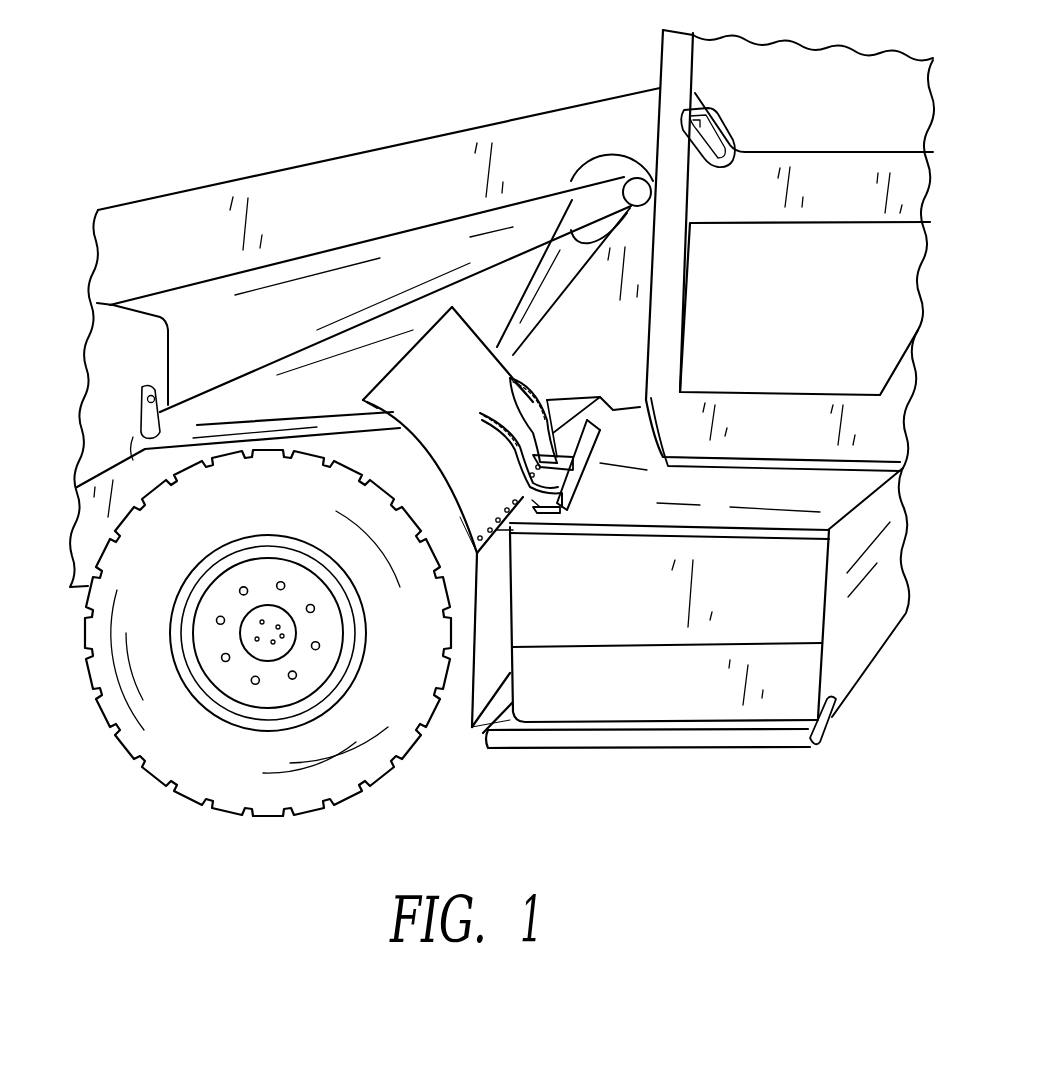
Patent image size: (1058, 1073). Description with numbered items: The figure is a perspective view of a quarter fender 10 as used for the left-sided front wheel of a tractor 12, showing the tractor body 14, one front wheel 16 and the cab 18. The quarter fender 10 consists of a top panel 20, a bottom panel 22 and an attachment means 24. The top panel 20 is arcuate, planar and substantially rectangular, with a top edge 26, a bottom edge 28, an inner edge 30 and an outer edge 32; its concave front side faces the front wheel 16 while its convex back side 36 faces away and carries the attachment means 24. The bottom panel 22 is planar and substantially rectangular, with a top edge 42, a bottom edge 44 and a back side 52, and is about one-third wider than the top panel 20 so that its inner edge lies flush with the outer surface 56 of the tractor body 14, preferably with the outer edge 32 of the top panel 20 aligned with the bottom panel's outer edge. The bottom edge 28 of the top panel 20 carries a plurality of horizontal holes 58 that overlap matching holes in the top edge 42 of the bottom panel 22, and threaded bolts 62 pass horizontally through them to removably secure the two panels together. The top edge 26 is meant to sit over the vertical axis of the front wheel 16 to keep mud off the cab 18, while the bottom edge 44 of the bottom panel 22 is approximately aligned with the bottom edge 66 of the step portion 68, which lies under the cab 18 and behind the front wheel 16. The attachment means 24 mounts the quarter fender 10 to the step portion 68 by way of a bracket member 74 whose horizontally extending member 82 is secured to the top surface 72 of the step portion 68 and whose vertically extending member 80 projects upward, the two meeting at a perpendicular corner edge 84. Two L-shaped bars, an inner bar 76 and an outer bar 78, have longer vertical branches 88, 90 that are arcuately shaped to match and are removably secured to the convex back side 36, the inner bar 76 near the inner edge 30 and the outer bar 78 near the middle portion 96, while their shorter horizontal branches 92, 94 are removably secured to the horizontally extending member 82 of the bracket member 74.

The quarter fender 10 is at (467, 743).
The tractor 12 is at (405, 100).
The tractor body 14 is at (332, 185).
The front wheel 16 is at (132, 737).
The cab 18 is at (680, 57).
The top panel 20 is at (423, 440).
The bottom panel 22 is at (472, 705).
The attachment means 24 is at (600, 463).
The top edge 26 is at (397, 378).
The bottom edge 28 is at (501, 529).
The inner edge 30 is at (483, 331).
The outer edge 32 is at (422, 432).
The convex back side 36 is at (473, 387).
The top edge 42 is at (495, 551).
The bottom edge 44 is at (480, 714).
The back side 52 is at (506, 630).
The outer surface 56 is at (604, 292).
The horizontal holes 58 is at (462, 503).
The threaded bolts 62 is at (470, 530).
The bottom edge 66 is at (573, 722).
The step portion 68 is at (678, 698).
The top surface 72 is at (734, 497).
The bracket member 74 is at (567, 482).
The inner bar 76 is at (528, 402).
The outer bar 78 is at (480, 418).
The vertically extending member 80 is at (596, 434).
The horizontally extending member 82 is at (548, 520).
The perpendicular corner edge 84 is at (552, 511).
The longer vertical branch 88 is at (549, 440).
The longer vertical branch 90 is at (505, 442).
The shorter horizontal branch 92 is at (553, 457).
The shorter horizontal branch 94 is at (518, 503).
The middle portion 96 is at (484, 404).